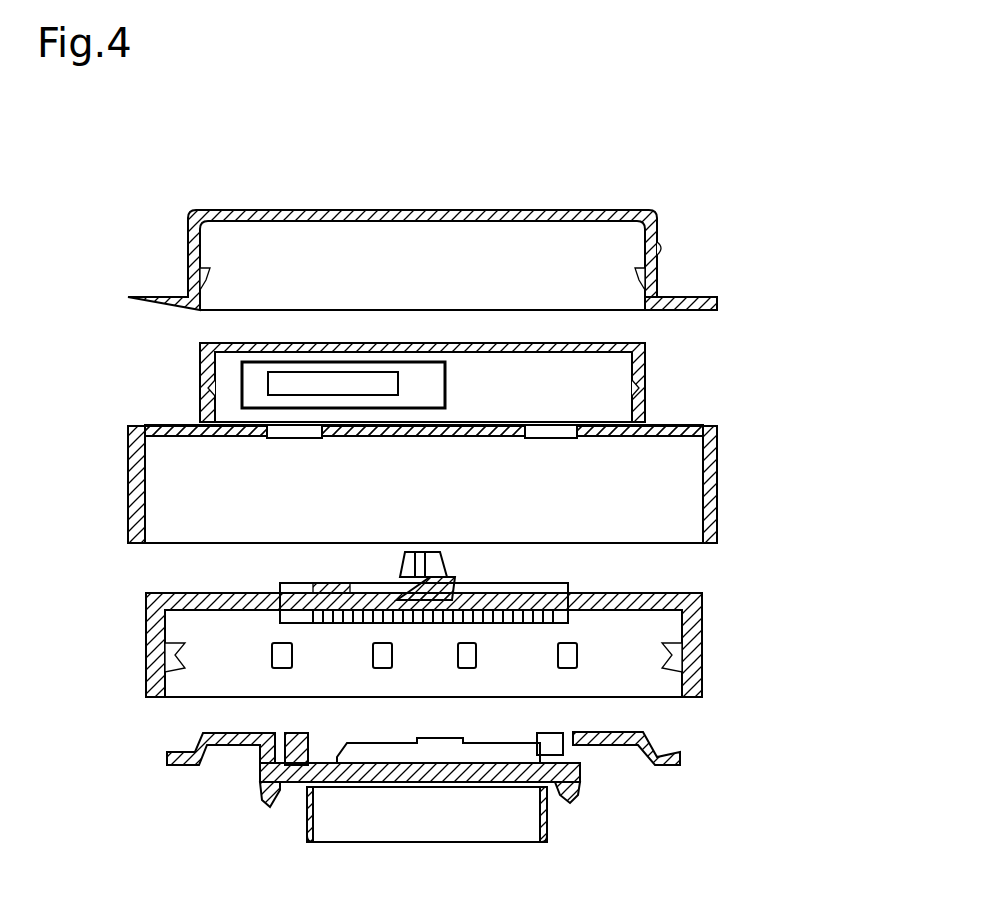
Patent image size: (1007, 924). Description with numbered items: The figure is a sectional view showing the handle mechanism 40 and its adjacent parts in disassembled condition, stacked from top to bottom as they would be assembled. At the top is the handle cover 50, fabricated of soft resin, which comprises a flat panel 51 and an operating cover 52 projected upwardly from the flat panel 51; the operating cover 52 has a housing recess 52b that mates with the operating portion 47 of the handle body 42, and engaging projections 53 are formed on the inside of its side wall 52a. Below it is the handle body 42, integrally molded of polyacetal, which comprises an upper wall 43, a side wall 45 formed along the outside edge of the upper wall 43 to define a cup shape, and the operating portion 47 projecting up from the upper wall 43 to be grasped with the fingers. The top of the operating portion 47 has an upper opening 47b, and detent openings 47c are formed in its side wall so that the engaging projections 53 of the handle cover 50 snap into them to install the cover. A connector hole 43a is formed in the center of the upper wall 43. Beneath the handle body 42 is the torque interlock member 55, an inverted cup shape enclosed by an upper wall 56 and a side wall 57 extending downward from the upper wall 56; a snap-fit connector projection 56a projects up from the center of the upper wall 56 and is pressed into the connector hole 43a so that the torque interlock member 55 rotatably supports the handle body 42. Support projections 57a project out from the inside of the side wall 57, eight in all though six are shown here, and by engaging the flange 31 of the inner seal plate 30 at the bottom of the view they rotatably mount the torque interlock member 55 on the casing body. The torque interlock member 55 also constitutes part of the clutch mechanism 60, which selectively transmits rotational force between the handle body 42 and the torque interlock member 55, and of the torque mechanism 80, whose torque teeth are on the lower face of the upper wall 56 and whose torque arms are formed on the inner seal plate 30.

The handle mechanism 40 is at (778, 248).
The handle cover 50 is at (660, 232).
The flat panel 51 is at (685, 297).
The operating cover 52 is at (652, 208).
The side wall 52a is at (190, 240).
The housing recess 52b is at (658, 248).
The engaging projections 53 is at (200, 285).
The operating portion 47 is at (643, 365).
The upper opening 47b is at (237, 345).
The detent openings 47c is at (210, 392).
The upper wall 43 is at (648, 427).
The connector hole 43a is at (435, 436).
The handle body 42 is at (720, 475).
The side wall 45 is at (712, 513).
The clutch mechanism 60 is at (124, 572).
The torque interlock member 55 is at (708, 608).
The upper wall 56 is at (607, 595).
The connector projection 56a is at (452, 570).
The side wall 57 is at (703, 628).
The support projections 57a is at (183, 660).
The torque mechanism 80 is at (205, 718).
The inner seal plate 30 is at (660, 745).
The flange 31 is at (662, 766).